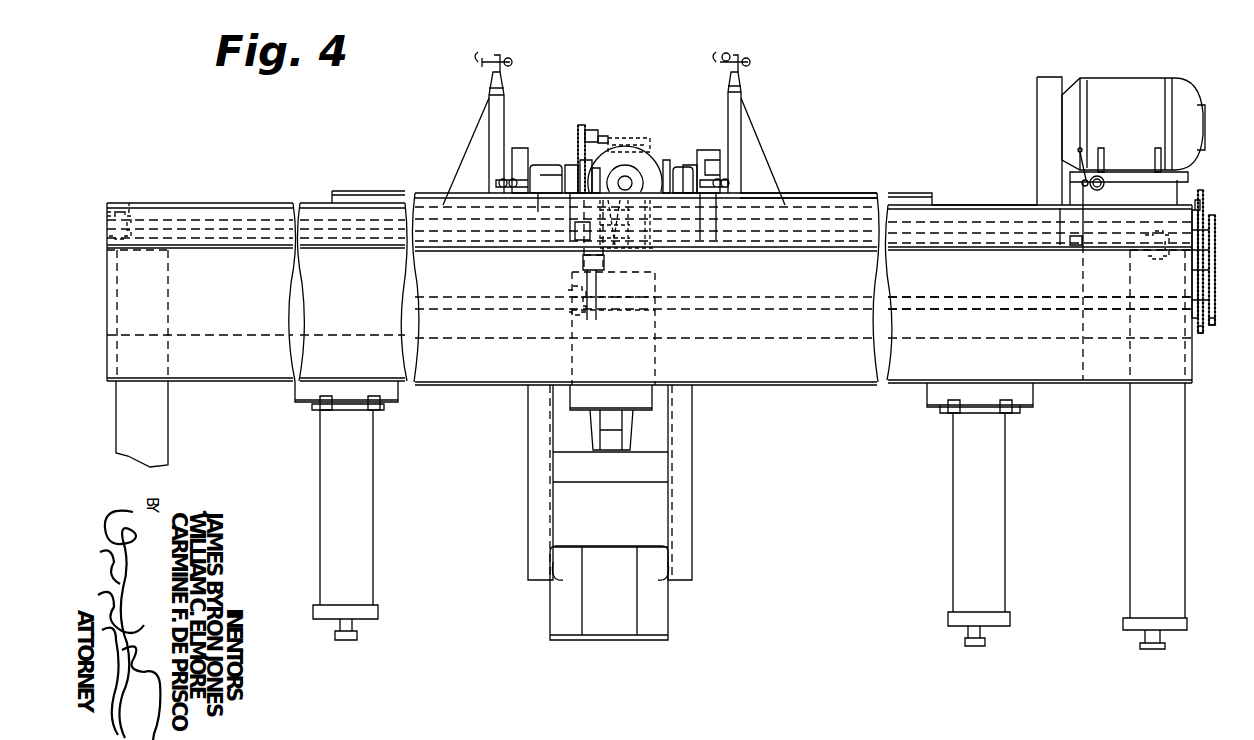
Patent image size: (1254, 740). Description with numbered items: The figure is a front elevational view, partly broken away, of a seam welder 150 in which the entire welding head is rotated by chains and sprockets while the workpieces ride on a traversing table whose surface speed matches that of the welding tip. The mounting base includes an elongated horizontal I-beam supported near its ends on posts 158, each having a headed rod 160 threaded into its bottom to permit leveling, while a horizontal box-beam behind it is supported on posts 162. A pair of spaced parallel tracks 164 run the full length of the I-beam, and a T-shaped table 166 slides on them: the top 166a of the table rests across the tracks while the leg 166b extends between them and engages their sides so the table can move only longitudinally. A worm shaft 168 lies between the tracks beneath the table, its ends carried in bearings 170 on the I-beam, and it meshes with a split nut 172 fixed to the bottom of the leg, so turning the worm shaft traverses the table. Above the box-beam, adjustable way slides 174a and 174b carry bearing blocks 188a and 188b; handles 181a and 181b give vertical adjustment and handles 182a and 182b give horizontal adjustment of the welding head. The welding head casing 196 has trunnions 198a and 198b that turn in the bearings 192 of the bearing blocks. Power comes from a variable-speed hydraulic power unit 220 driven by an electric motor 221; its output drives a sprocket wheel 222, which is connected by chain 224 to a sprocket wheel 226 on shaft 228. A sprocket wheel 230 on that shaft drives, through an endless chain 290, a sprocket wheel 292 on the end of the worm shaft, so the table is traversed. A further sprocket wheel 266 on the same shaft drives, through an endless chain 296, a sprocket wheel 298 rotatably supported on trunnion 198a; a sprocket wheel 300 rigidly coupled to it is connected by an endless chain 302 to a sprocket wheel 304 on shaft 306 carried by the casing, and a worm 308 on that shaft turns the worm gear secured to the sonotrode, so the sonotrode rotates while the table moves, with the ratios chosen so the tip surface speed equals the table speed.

The seam welder 150 is at (738, 404).
The posts 158 is at (345, 472).
The headed rod 160 is at (348, 640).
The posts 162 is at (150, 420).
The tracks 164 is at (187, 205).
The T-shaped table 166 is at (862, 190).
The top of the table 166a is at (912, 195).
The leg of the table 166b is at (940, 207).
The worm shaft 168 is at (262, 222).
The bearings 170 is at (118, 222).
The split nut 172 is at (648, 250).
The adjustable way slide 174a is at (495, 137).
The adjustable way slide 174b is at (765, 120).
The handle 181a is at (497, 57).
The handle 181b is at (742, 60).
The handle 182a is at (515, 148).
The handle 182b is at (718, 193).
The bearing block 188a is at (545, 168).
The bearing block 188b is at (690, 182).
The bearings 192 is at (572, 165).
The welding head casing 196 is at (645, 160).
The trunnion 198a is at (594, 168).
The trunnion 198b is at (675, 172).
The variable-speed hydraulic power unit 220 is at (1095, 195).
The electric motor 221 is at (1112, 90).
The sprocket wheel 222 is at (1203, 195).
The chain 224 is at (1196, 283).
The sprocket wheel 226 is at (1200, 333).
The shaft 228 is at (1005, 305).
The sprocket wheel 230 is at (1212, 318).
The sprocket wheel 266 is at (570, 290).
The endless chain 290 is at (1200, 265).
The sprocket wheel 292 is at (1215, 235).
The endless chain 296 is at (580, 262).
The sprocket wheel 298 is at (603, 136).
The sprocket wheel 300 is at (565, 235).
The endless chain 302 is at (582, 125).
The sprocket wheel 304 is at (592, 130).
The shaft 306 is at (640, 129).
The worm 308 is at (650, 152).